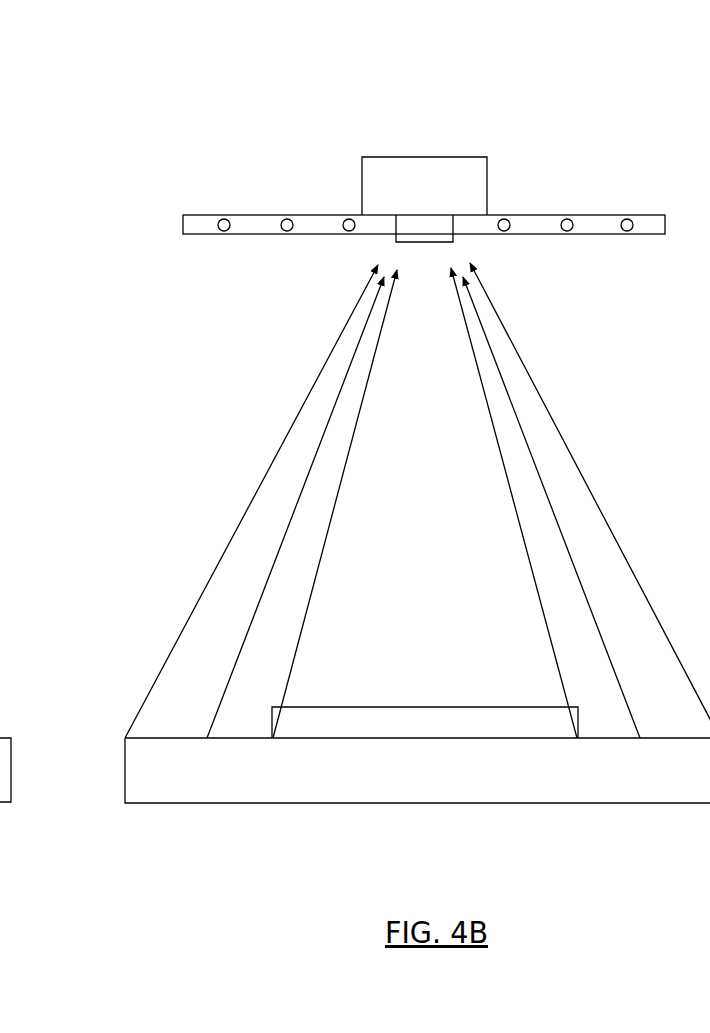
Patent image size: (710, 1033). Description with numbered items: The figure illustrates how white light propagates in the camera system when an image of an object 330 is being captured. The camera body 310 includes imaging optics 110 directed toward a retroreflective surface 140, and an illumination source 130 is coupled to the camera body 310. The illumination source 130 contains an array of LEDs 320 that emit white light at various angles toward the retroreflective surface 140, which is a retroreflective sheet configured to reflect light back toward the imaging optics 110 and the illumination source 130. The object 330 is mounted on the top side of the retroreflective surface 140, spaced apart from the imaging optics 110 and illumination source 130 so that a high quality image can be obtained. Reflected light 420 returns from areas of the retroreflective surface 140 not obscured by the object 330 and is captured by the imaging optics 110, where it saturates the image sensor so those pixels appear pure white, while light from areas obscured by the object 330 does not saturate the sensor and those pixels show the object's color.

The illumination source 130 is at (193, 227).
The LEDs 320 is at (525, 215).
The camera body 310 is at (390, 203).
The imaging optics 110 is at (438, 221).
The reflected light 420 is at (301, 634).
The object 330 is at (325, 740).
The retroreflective surface 140 is at (517, 803).